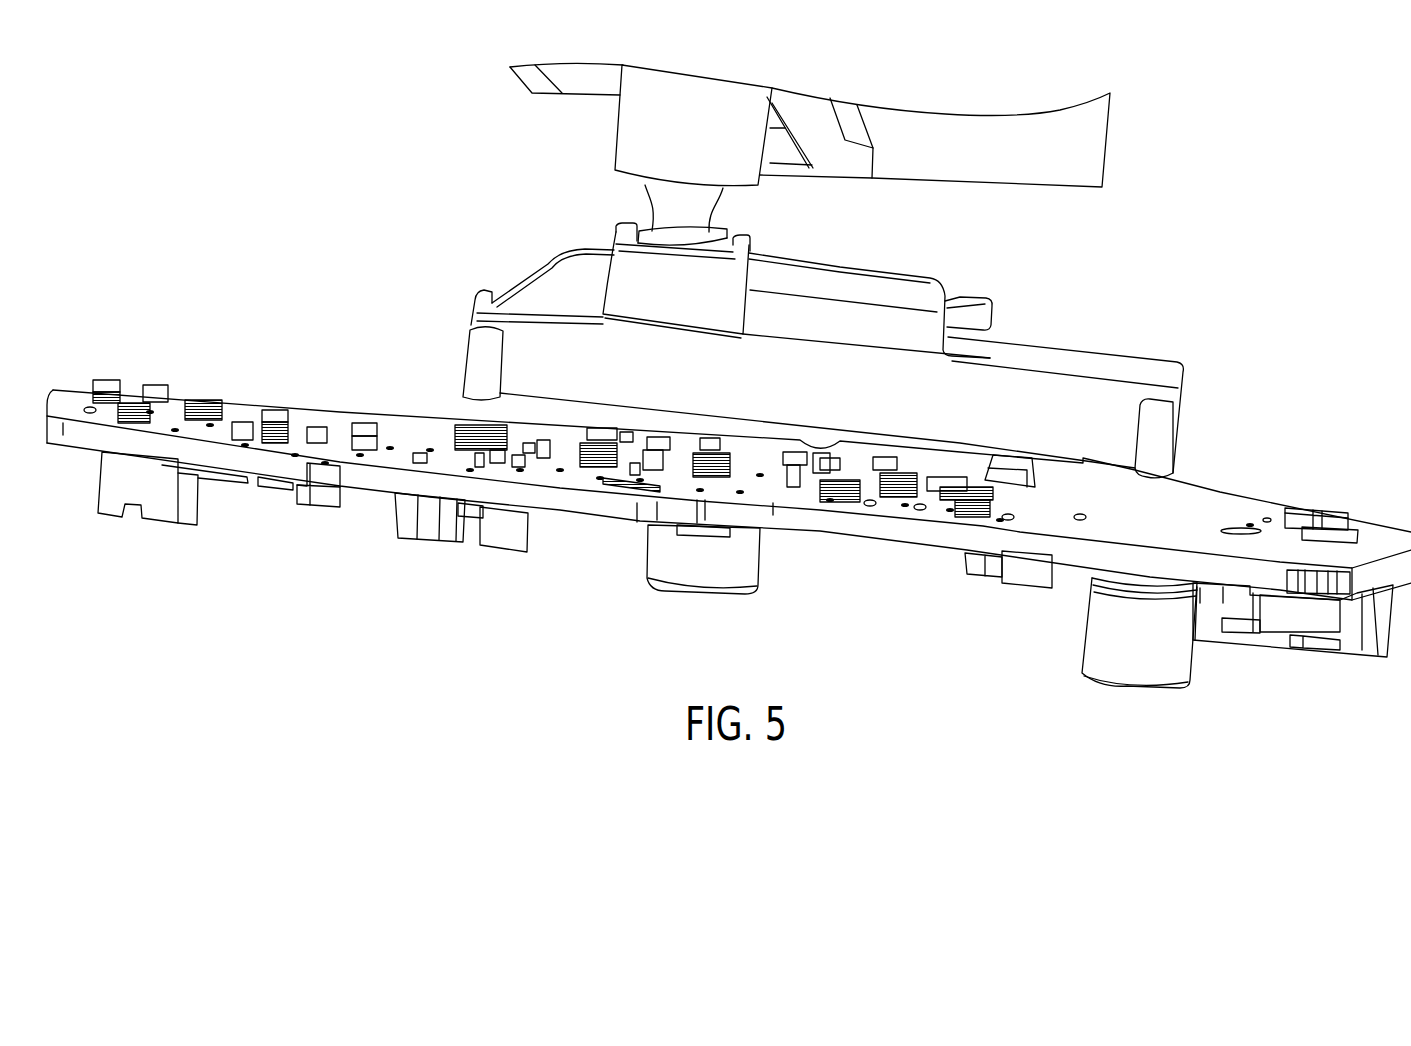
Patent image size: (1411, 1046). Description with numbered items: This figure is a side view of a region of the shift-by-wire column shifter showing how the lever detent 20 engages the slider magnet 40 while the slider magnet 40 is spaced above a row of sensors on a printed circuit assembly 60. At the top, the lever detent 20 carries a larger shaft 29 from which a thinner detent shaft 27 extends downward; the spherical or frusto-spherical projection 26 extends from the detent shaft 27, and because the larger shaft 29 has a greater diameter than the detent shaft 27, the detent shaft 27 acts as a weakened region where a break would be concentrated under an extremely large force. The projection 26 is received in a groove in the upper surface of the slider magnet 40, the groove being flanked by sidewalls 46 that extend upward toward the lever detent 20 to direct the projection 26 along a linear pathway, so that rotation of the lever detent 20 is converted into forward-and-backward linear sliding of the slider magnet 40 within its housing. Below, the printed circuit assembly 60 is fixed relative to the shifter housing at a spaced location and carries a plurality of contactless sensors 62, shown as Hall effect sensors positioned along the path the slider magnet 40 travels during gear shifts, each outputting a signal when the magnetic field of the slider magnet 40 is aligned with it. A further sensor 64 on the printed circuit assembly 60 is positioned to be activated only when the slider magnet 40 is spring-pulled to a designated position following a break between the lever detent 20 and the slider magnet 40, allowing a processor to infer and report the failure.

The lever detent 20 is at (1085, 150).
The larger shaft 29 is at (640, 141).
The detent shaft 27 is at (667, 214).
The projection 26 is at (705, 240).
The sidewalls 46 is at (633, 276).
The slider magnet 40 is at (1168, 375).
The printed circuit assembly 60 is at (580, 546).
The contactless sensors 62 is at (727, 470).
The sensor 64 is at (1357, 522).